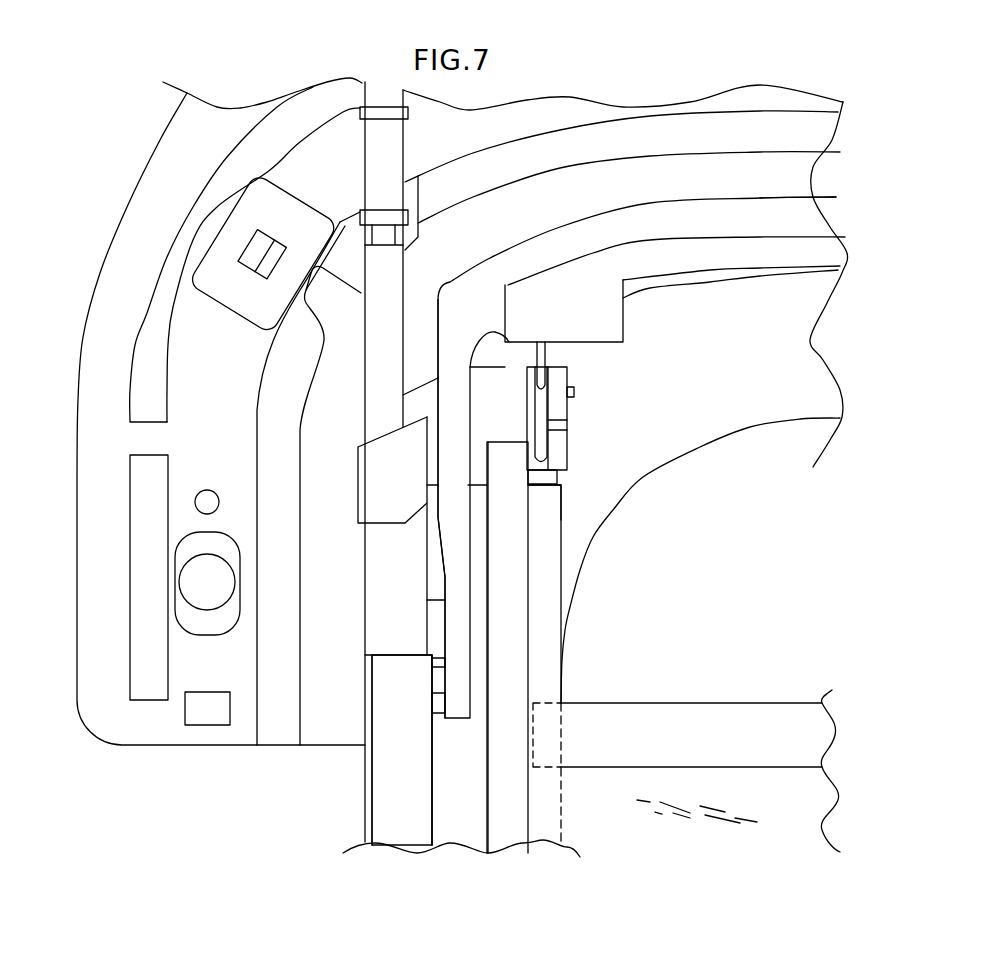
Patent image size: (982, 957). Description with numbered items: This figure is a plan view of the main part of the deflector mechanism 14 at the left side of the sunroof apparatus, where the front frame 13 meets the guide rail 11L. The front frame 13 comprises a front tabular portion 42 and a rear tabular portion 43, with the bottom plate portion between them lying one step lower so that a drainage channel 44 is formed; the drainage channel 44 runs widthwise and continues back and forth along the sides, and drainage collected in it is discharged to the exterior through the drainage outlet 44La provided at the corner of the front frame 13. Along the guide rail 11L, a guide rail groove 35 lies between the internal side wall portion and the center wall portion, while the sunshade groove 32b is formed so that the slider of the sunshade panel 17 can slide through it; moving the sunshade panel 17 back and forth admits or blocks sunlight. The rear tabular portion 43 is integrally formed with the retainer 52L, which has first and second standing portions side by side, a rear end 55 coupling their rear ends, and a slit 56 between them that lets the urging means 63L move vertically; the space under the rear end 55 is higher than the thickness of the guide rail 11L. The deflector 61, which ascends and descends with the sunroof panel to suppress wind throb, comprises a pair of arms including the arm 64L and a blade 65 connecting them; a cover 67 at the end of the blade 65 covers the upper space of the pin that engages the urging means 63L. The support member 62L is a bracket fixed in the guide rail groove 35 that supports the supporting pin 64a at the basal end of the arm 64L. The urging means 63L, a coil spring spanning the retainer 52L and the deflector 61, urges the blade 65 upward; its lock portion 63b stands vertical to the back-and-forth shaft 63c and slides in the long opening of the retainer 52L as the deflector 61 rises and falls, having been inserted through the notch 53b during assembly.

The guide rail 11L is at (519, 850).
The front frame 13 is at (837, 308).
The deflector mechanism 14 is at (533, 213).
The sunshade panel 17 is at (700, 703).
The sunshade groove 32b is at (562, 547).
The guide rail groove 35 is at (474, 807).
The front tabular portion 42 is at (446, 142).
The rear tabular portion 43 is at (772, 367).
The drainage channel 44 is at (489, 242).
The drainage outlet 44La is at (260, 240).
The retainer 52L is at (571, 491).
The notch 53b is at (595, 418).
The rear end 55 is at (557, 478).
The slit 56 is at (542, 447).
The deflector 61 is at (665, 203).
The support member 62L is at (390, 793).
The urging means 63L is at (614, 407).
The lock portion 63b is at (572, 395).
The shaft 63c is at (550, 360).
The arm 64L is at (442, 553).
The supporting pin 64a is at (440, 680).
The blade 65 is at (783, 197).
The cover 67 is at (585, 316).